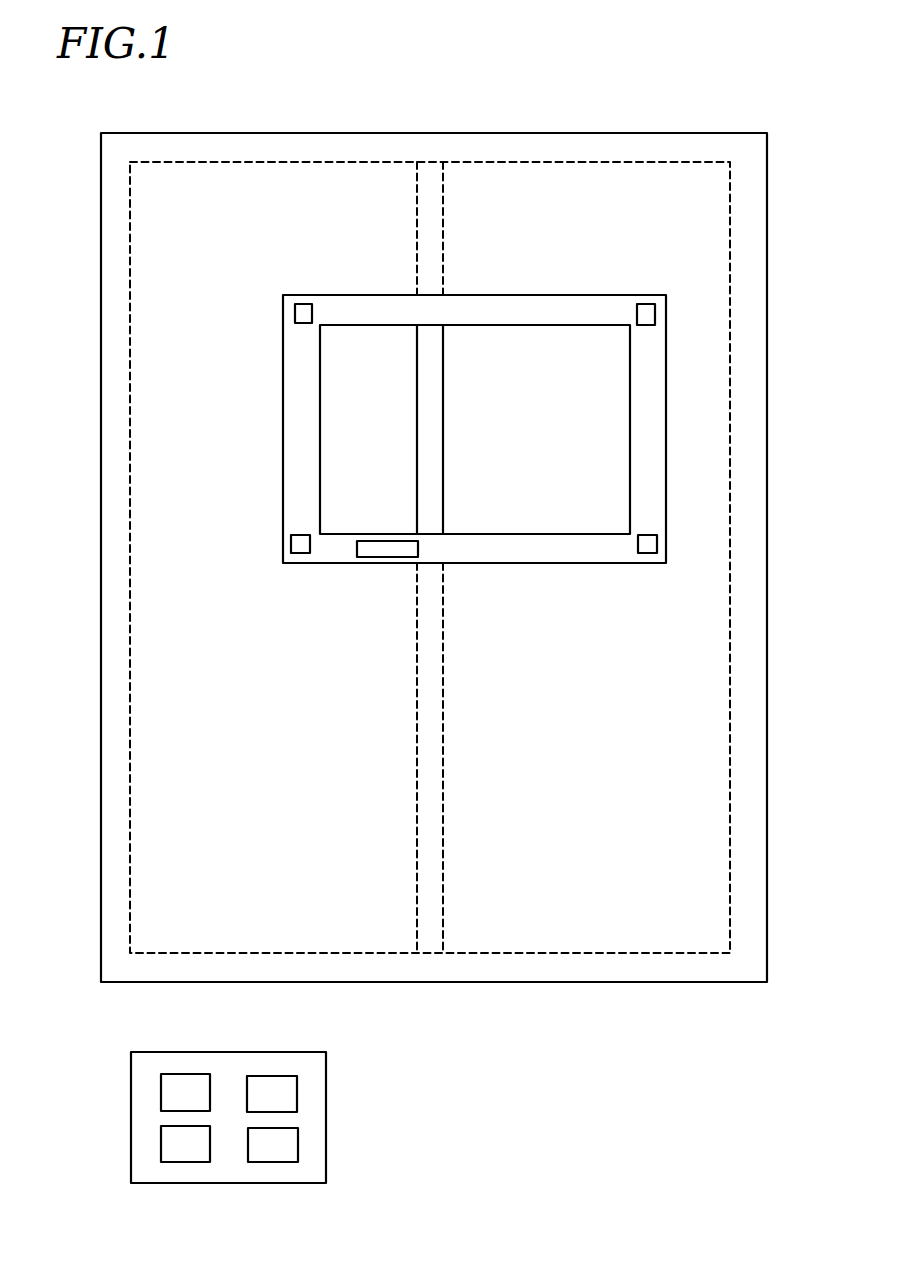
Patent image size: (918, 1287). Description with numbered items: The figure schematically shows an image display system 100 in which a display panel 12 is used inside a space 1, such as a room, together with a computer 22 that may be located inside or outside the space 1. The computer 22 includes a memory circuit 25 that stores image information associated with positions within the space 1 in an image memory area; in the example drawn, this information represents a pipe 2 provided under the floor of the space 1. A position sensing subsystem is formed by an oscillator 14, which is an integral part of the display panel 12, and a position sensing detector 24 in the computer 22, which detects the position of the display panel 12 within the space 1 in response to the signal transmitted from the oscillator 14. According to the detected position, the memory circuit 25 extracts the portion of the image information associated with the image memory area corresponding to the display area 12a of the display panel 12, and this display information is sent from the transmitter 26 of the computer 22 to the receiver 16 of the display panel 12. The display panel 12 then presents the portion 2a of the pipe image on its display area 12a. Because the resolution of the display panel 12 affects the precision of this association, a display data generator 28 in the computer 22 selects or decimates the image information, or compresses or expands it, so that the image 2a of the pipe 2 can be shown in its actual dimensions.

The image display system 100 is at (668, 76).
The space 1 is at (708, 133).
The pipe 2 is at (435, 810).
The portion of the image information 2a is at (434, 450).
The display panel 12 is at (482, 295).
The display area 12a is at (534, 326).
The oscillator 14 is at (647, 547).
The receiver 16 is at (388, 547).
The computer 22 is at (267, 1052).
The position sensing detector 24 is at (290, 1091).
The memory circuit 25 is at (292, 1145).
The transmitter 26 is at (174, 1145).
The display data generator 28 is at (172, 1097).